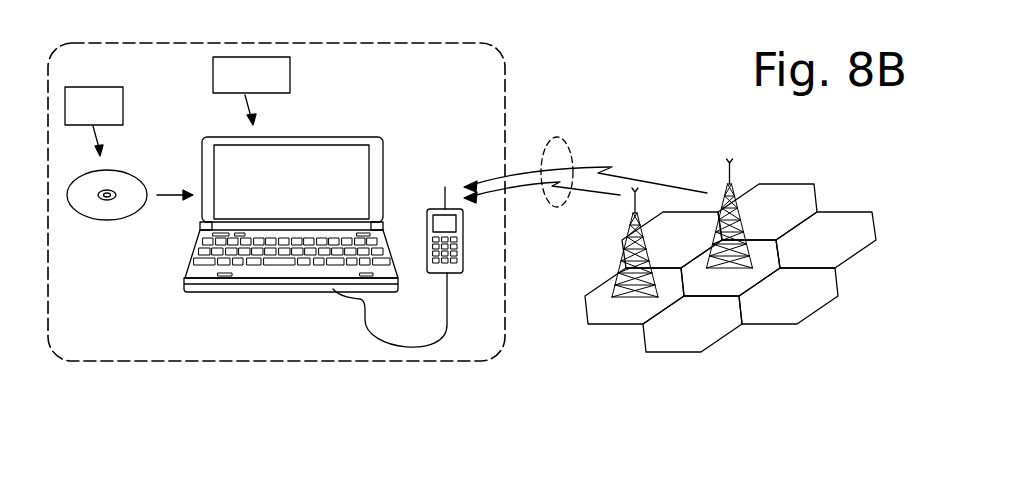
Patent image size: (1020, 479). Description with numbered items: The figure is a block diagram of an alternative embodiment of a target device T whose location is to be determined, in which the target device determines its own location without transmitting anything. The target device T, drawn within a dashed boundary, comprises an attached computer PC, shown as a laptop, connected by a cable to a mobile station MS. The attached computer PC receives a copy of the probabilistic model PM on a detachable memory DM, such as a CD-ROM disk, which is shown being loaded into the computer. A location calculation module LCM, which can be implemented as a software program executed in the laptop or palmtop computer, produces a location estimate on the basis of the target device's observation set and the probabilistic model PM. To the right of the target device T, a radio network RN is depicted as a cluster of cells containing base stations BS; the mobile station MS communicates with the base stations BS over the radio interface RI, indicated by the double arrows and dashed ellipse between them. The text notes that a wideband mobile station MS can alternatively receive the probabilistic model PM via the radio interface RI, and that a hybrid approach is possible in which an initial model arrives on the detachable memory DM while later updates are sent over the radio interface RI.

The target device T is at (506, 92).
The probabilistic model PM is at (94, 106).
The detachable memory DM is at (123, 169).
The location calculation module LCM is at (251, 75).
The attached computer PC is at (383, 137).
The mobile station MS is at (437, 208).
The radio interface RI is at (558, 137).
The base station BS is at (682, 241).
The radio network RN is at (812, 316).